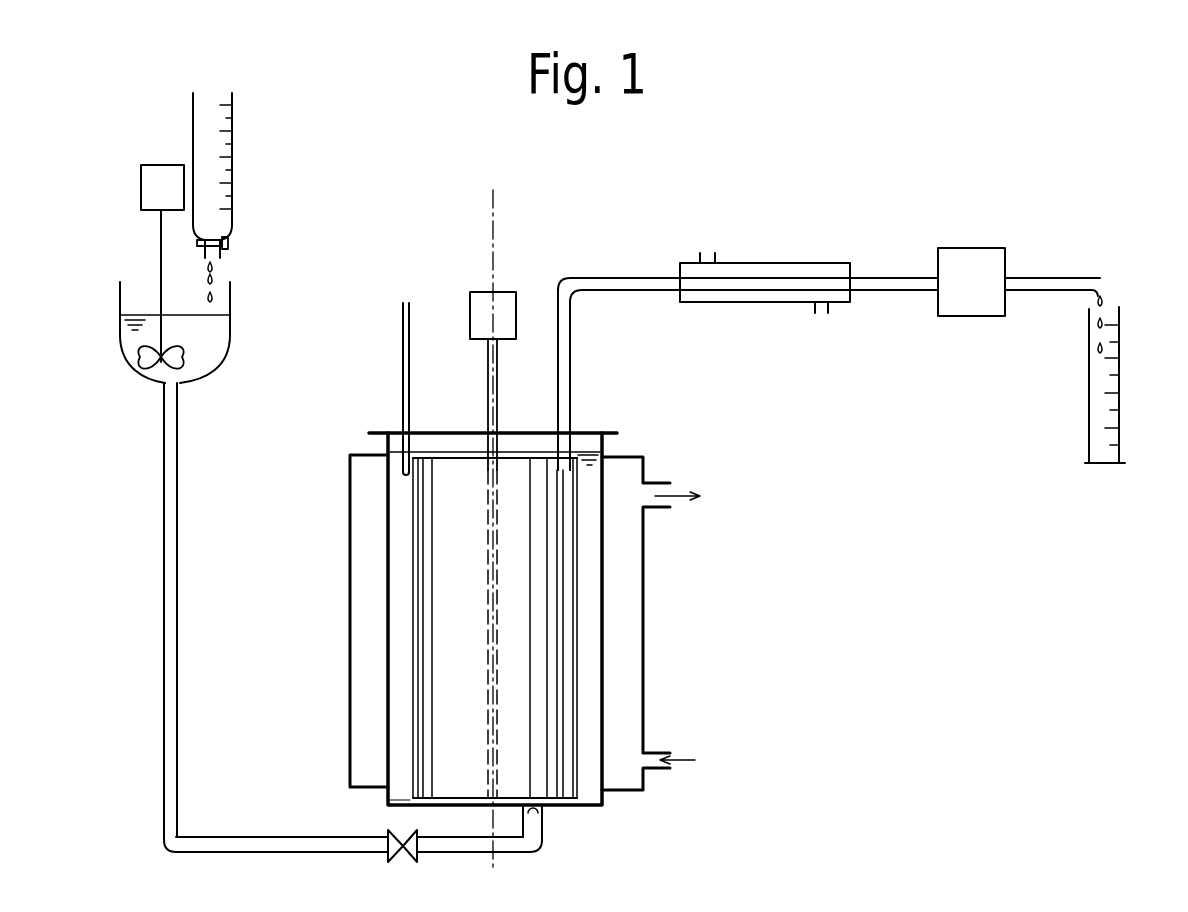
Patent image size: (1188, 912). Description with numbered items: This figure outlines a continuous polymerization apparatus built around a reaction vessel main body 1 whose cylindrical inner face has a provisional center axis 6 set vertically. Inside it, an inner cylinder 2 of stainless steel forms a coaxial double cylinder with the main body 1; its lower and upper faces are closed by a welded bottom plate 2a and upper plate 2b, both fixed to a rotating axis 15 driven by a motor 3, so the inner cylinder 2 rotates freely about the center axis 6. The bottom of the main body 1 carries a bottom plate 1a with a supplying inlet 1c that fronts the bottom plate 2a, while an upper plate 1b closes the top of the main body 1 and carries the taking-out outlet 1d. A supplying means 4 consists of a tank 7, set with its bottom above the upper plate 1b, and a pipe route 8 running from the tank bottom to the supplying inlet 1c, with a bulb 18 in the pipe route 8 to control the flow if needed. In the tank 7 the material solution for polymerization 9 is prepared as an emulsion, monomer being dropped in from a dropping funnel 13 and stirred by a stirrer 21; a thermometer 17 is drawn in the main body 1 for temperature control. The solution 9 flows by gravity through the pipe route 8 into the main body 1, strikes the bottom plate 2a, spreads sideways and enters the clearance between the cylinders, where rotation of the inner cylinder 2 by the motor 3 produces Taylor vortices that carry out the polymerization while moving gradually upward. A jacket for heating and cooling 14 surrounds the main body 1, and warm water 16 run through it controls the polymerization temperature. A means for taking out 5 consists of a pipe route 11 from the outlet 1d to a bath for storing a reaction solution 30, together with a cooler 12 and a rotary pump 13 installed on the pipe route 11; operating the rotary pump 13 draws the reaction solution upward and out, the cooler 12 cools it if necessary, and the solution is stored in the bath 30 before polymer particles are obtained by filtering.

The reaction vessel main body 1 is at (603, 665).
The bottom plate 1a is at (392, 808).
The upper plate 1b is at (527, 432).
The supplying inlet 1c is at (544, 823).
The taking-out outlet 1d is at (563, 445).
The inner cylinder 2 is at (578, 690).
The bottom plate of inner cylinder 2a is at (440, 800).
The upper plate of inner cylinder 2b is at (442, 458).
The motor 3 is at (476, 310).
The supplying means 4 is at (185, 657).
The means for taking out 5 is at (934, 229).
The center axis 6 is at (493, 200).
The tank 7 is at (230, 298).
The pipe route 8 is at (177, 527).
The material solution for polymerization 9 is at (215, 345).
The pipe route 11 is at (633, 275).
The cooler 12 is at (770, 263).
The rotary pump 13 is at (232, 118).
The jacket for heating and cooling 14 is at (643, 592).
The rotating axis 15 is at (488, 420).
The warm water 16 is at (700, 761).
The thermometer 17 is at (403, 320).
The bulb 18 is at (390, 862).
The stirrer 21 is at (150, 186).
The bath for storing a reaction solution 30 is at (1120, 330).